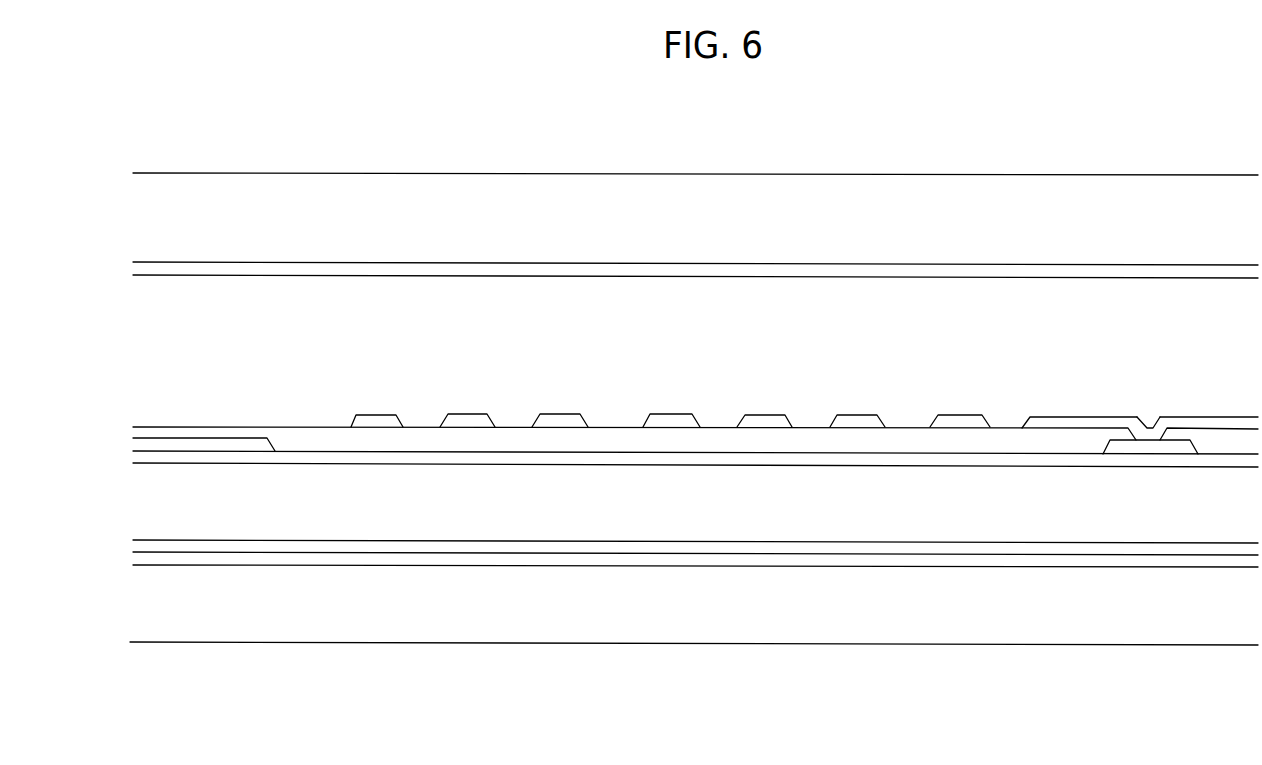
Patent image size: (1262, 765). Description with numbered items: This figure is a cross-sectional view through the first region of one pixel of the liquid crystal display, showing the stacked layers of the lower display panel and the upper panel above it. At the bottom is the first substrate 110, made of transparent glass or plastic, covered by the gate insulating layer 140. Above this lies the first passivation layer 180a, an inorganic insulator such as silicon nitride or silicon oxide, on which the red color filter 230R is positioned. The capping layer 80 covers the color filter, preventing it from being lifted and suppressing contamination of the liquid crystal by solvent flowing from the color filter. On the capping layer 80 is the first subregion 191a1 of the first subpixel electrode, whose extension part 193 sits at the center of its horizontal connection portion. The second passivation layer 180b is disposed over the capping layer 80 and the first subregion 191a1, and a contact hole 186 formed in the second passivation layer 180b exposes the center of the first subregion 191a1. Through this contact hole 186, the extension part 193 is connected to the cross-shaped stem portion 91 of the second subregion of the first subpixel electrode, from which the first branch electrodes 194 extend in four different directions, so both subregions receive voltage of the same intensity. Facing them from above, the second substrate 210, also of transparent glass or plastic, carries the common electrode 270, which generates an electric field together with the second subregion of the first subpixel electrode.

The first substrate 110 is at (582, 610).
The gate insulating layer 140 is at (467, 558).
The first passivation layer 180a is at (723, 548).
The second passivation layer 180b is at (858, 447).
The red color filter 230R is at (655, 508).
The first subregion of the first subpixel electrode 191a1 is at (153, 443).
The first branch electrodes 194 is at (377, 420).
The extension part 193 is at (1127, 445).
The capping layer 80 is at (1007, 458).
The third contact hole 186 is at (1146, 426).
The cross-shaped stem portion 91 is at (1183, 422).
The second substrate 210 is at (991, 190).
The common electrode 270 is at (827, 273).